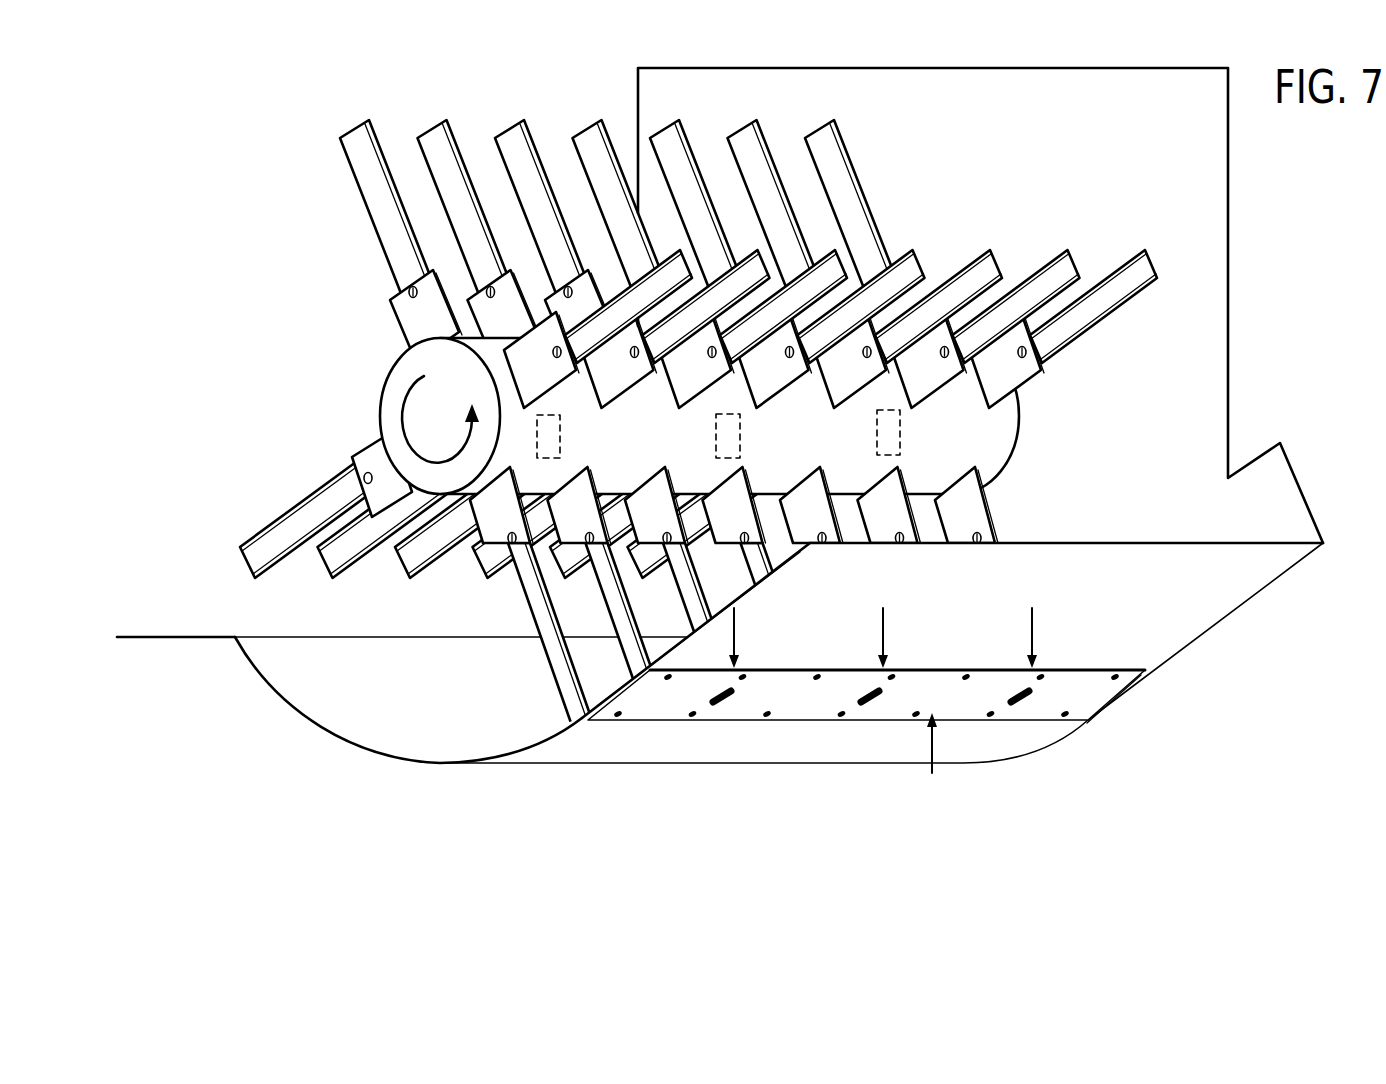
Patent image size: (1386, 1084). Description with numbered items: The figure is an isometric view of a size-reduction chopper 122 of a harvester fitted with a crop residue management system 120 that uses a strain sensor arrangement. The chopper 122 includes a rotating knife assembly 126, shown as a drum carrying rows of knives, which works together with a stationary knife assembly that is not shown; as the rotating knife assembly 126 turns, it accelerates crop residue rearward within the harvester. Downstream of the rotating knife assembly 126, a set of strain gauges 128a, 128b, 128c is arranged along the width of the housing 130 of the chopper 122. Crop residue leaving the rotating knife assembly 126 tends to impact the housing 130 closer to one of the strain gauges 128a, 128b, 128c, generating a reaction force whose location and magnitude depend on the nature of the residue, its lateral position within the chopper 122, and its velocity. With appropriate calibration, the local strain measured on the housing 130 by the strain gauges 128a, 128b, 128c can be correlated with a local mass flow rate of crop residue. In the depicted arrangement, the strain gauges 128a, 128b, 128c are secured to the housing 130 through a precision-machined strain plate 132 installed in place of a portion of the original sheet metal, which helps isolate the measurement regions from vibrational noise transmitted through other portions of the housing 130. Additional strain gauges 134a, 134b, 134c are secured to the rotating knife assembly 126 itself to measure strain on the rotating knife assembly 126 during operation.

The crop residue management system 120 is at (1118, 718).
The chopper 122 is at (228, 192).
The rotating knife assembly 126 is at (366, 390).
The strain gauge 128a is at (726, 699).
The strain gauge 128b is at (874, 699).
The strain gauge 128c is at (1023, 699).
The housing 130 is at (340, 735).
The strain plate 132 is at (659, 706).
The strain gauge 134a is at (560, 425).
The strain gauge 134b is at (740, 425).
The strain gauge 134c is at (900, 420).